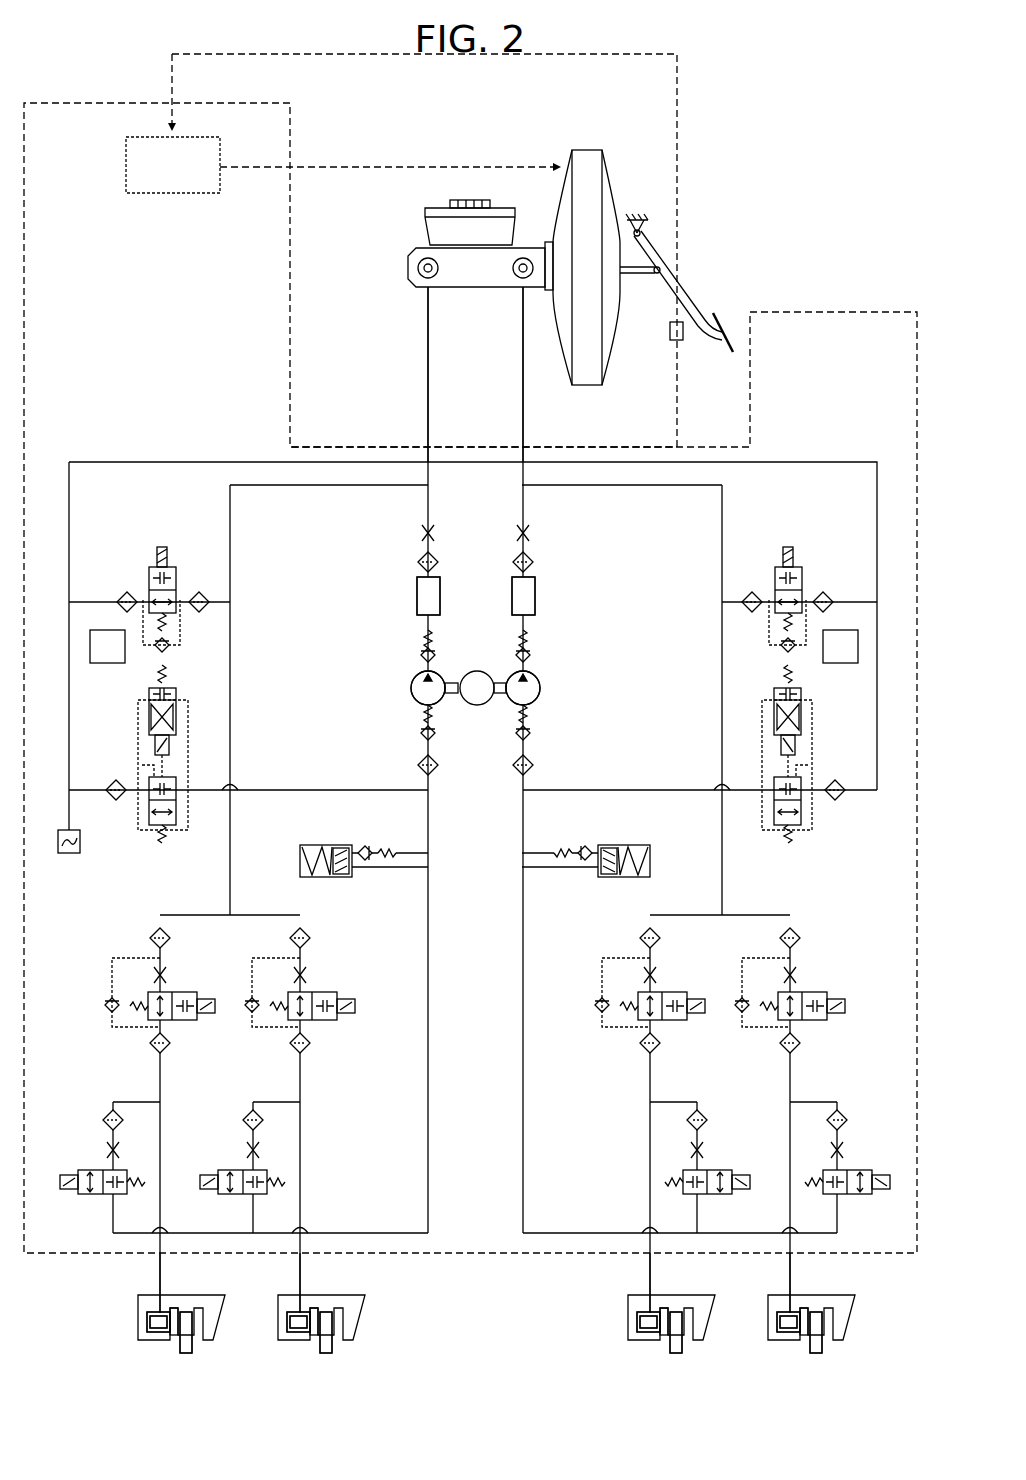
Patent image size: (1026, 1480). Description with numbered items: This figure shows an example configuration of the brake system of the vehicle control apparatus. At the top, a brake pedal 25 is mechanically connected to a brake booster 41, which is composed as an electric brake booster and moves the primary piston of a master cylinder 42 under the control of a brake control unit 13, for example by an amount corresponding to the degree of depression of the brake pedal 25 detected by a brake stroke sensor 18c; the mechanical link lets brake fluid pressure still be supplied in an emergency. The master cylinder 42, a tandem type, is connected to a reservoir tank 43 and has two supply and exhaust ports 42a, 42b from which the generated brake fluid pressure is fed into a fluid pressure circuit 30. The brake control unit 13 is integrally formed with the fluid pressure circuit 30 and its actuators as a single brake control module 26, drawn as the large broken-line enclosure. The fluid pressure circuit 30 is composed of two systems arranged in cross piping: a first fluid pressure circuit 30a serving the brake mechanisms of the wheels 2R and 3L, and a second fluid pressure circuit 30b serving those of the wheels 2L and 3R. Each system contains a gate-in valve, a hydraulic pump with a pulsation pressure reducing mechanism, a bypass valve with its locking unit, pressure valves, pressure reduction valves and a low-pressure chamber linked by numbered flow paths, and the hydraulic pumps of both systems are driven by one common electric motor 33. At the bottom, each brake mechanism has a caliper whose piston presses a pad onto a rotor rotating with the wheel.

The brake control unit 13 is at (163, 177).
The brake stroke sensor 18c is at (670, 340).
The brake pedal 25 is at (716, 318).
The brake control module 26 is at (135, 98).
The fluid pressure circuit 30 is at (475, 585).
The first fluid pressure circuit 30a is at (133, 440).
The second fluid pressure circuit 30b is at (780, 418).
The electric motor 33 is at (477, 705).
The brake booster 41 is at (582, 148).
The master cylinder 42 is at (435, 283).
The supply and exhaust port 42a is at (514, 282).
The supply and exhaust port 42b is at (418, 282).
The reservoir tank 43 is at (425, 232).
The right wheel 2R is at (188, 1290).
The left wheel 2L is at (678, 1290).
The left wheel 3L is at (328, 1290).
The right wheel 3R is at (818, 1290).